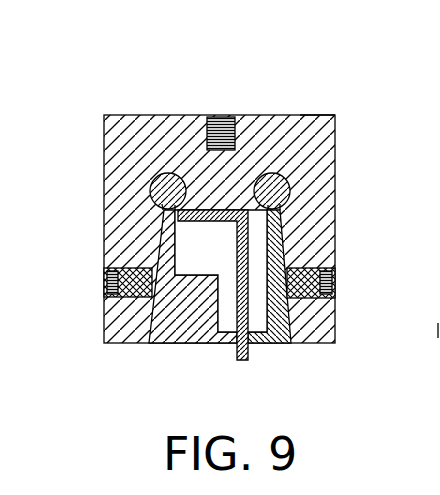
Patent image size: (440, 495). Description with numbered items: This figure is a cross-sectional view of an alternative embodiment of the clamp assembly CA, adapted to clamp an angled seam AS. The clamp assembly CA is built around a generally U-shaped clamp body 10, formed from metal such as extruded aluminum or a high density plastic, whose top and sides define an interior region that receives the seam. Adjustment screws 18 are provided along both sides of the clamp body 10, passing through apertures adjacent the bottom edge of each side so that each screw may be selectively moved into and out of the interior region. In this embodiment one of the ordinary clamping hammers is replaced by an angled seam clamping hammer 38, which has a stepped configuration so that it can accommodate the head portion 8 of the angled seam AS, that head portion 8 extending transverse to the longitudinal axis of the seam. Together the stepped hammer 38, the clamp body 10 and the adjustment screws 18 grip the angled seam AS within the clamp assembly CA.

The clamp body 10 is at (335, 160).
The head portion 8 is at (207, 206).
The angled seam AS is at (235, 247).
The adjustment screws 18 is at (114, 298).
The angled seam clamping hammer 38 is at (183, 305).
The clamp assembly CA is at (309, 107).